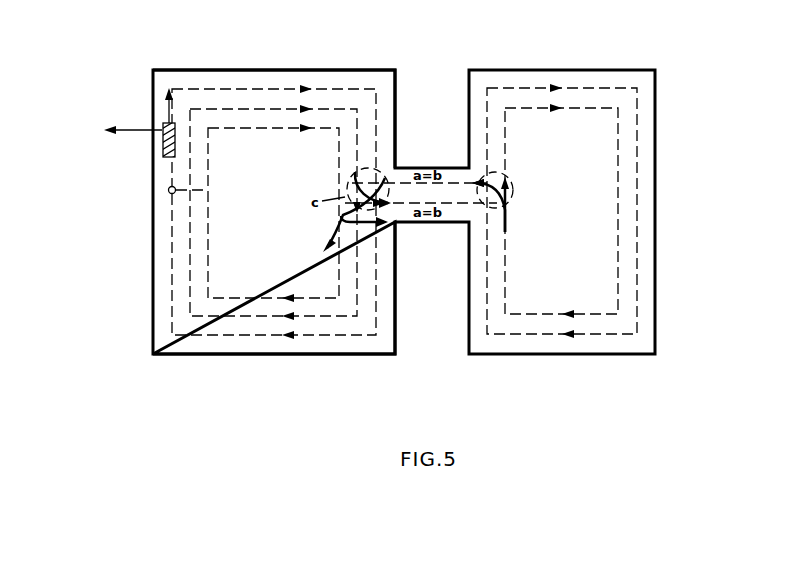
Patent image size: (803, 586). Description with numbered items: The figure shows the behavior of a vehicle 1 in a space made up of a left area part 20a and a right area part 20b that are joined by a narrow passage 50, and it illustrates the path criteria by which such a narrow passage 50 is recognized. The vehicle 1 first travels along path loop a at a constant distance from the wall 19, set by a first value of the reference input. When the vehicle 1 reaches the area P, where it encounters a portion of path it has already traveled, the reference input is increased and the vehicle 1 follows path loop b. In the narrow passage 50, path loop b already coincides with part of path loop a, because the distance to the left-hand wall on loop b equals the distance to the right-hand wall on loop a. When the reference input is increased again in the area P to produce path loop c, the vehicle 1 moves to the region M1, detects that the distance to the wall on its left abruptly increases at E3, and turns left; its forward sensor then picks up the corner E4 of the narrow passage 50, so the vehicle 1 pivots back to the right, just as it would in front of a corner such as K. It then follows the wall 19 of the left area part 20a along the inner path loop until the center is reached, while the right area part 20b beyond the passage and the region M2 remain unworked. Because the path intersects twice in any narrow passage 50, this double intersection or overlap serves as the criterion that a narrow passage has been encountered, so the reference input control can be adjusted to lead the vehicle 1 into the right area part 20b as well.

The narrow passage 50 is at (430, 130).
The wall 19 is at (297, 355).
The left area part 20a is at (225, 222).
The right area part 20b is at (605, 218).
The vehicle 1 is at (165, 140).
The region M1 is at (360, 186).
The region M2 is at (513, 193).
The corner K is at (388, 58).
The edge of narrow passage E3 is at (407, 158).
The corner of narrow passage E4 is at (407, 240).
The area P is at (171, 193).